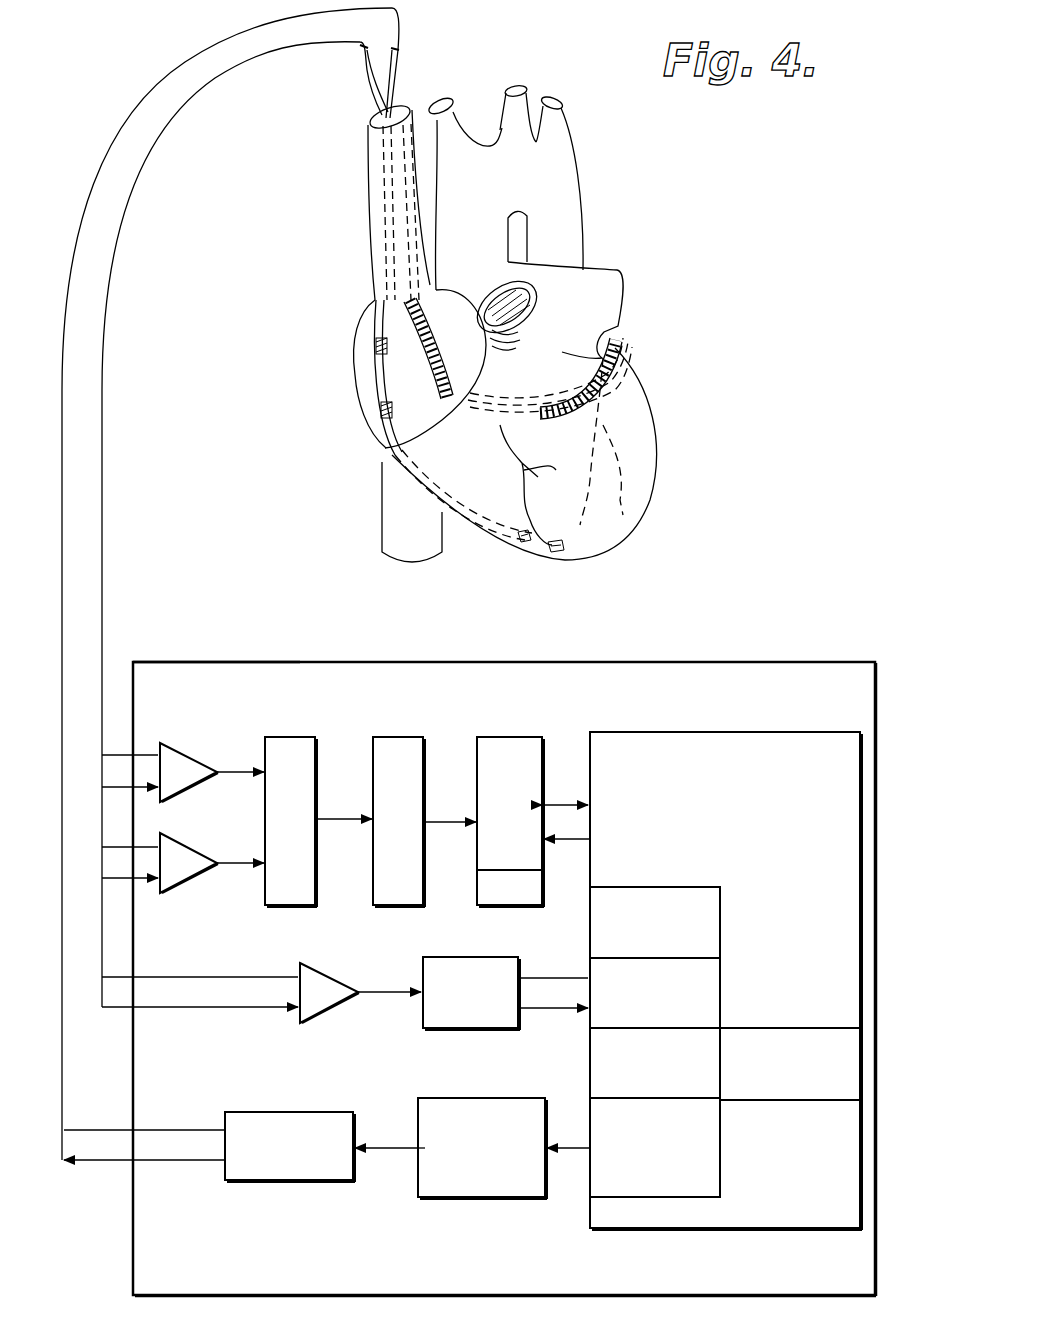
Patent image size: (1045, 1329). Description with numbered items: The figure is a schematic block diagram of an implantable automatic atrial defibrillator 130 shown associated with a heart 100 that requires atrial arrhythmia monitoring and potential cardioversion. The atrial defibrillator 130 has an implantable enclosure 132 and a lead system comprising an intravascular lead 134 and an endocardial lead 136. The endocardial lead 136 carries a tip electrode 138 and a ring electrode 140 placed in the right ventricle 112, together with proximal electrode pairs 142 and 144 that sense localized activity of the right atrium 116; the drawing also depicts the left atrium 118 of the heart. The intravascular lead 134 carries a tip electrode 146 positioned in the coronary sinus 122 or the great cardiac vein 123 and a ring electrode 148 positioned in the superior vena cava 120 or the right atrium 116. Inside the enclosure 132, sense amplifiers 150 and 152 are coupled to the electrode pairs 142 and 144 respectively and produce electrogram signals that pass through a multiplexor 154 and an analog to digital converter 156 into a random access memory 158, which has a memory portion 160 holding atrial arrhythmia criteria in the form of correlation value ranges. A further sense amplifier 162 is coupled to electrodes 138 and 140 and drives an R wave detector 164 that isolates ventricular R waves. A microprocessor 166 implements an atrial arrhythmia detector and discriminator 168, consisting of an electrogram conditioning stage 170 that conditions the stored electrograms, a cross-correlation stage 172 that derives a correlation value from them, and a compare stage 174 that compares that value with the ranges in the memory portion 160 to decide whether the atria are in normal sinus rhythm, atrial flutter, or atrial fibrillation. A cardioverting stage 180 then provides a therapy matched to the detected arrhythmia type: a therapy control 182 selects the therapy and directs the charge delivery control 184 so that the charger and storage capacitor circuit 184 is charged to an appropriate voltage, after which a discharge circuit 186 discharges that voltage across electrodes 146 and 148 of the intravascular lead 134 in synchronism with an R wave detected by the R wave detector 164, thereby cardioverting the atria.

The heart 100 is at (672, 213).
The right ventricle 112 is at (448, 467).
The right atrium 116 is at (366, 380).
The left atrium 118 is at (605, 334).
The superior vena cava 120 is at (375, 200).
The coronary sinus 122 is at (537, 412).
The great cardiac vein 123 is at (604, 436).
The implantable automatic atrial defibrillator 130 is at (722, 622).
The implantable enclosure 132 is at (246, 661).
The intravascular lead 134 is at (398, 76).
The endocardial lead 136 is at (366, 84).
The tip electrode 138 is at (558, 552).
The ring electrode 140 is at (520, 543).
The proximal electrode pair 142 is at (356, 426).
The proximal electrode pair 144 is at (360, 336).
The tip electrode 146 is at (626, 363).
The ring electrode 148 is at (372, 360).
The sense amplifier 150 is at (183, 883).
The sense amplifier 152 is at (188, 755).
The multiplexor 154 is at (290, 737).
The analog to digital converter 156 is at (398, 737).
The random access memory 158 is at (501, 737).
The memory portion 160 is at (490, 905).
The sense amplifier 162 is at (318, 1012).
The R wave detector 164 is at (483, 1028).
The microprocessor 166 is at (806, 732).
The atrial arrhythmia detector and discriminator 168 is at (777, 950).
The electrogram conditioning stage 170 is at (720, 918).
The cross-correlation stage 172 is at (722, 1002).
The compare stage 174 is at (760, 1092).
The cardioverting stage 180 is at (443, 1232).
The therapy control 182 is at (598, 1057).
The charge delivery control and charger and storage capacitor circuit 184 is at (720, 1183).
The discharge circuit 186 is at (320, 1180).